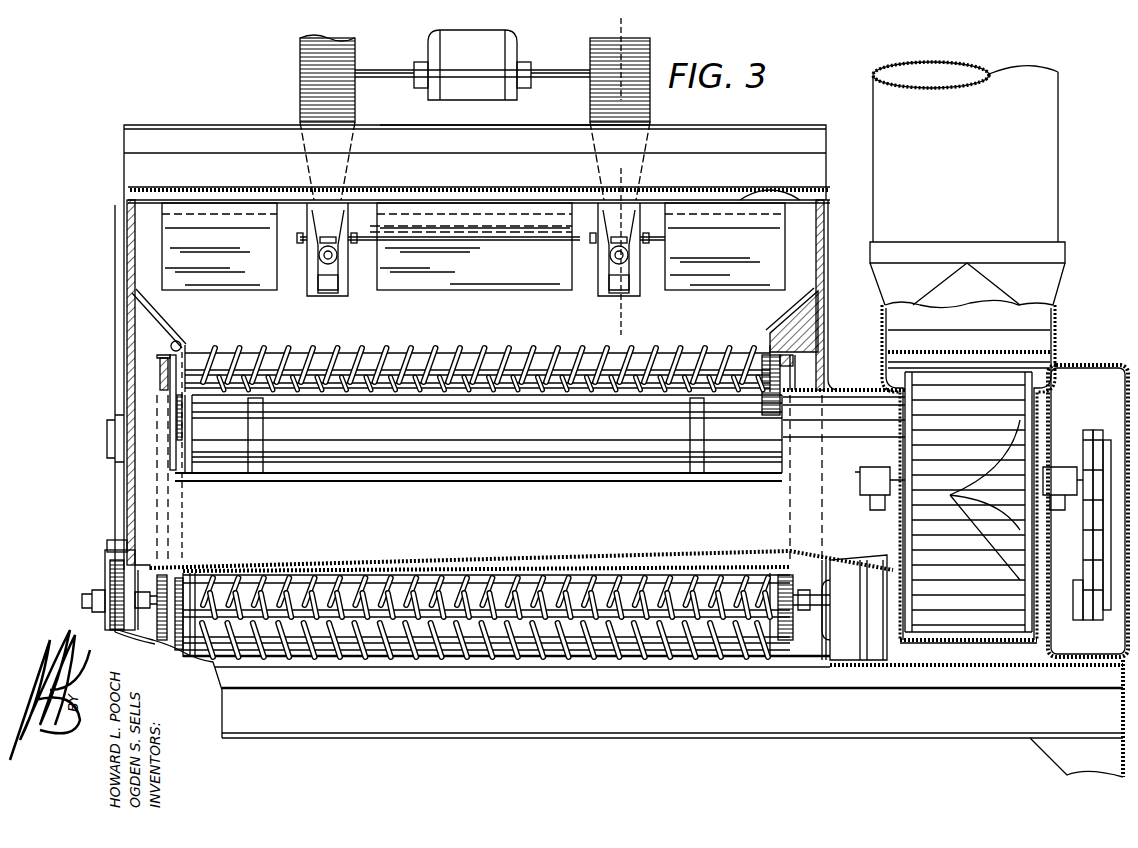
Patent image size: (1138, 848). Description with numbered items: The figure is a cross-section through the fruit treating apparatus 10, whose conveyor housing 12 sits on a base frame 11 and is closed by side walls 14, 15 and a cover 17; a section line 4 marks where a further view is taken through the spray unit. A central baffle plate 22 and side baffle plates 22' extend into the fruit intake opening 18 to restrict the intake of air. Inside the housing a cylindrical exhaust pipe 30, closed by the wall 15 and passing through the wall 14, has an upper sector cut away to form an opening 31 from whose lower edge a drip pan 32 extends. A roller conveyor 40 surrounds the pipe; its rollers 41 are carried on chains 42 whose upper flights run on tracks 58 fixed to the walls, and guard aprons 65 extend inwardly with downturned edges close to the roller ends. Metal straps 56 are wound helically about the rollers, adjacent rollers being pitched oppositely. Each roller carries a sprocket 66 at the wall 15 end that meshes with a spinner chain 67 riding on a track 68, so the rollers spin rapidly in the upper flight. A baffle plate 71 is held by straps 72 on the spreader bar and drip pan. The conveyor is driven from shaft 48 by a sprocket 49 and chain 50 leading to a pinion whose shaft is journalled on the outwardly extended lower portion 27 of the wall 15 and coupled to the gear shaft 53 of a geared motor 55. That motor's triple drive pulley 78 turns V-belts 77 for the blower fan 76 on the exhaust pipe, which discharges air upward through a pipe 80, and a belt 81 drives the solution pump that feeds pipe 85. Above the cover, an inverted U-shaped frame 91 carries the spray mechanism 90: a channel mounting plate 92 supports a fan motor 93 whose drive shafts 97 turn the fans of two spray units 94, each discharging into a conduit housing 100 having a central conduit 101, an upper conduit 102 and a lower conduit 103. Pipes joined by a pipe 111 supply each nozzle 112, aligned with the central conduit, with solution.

The apparatus 10 is at (112, 90).
The base frame 11 is at (598, 748).
The conveyor housing 12 is at (114, 335).
The side wall 14 is at (830, 276).
The side wall 15 is at (126, 278).
The cover 17 is at (432, 188).
The fruit intake opening 18 is at (712, 333).
The central baffle plate 22 is at (474, 255).
The side baffle plates 22' is at (473, 255).
The lower portion of housing wall 27 is at (104, 568).
The cylindrical exhaust pipe 30 is at (546, 517).
The opening 31 is at (470, 465).
The drip pan 32 is at (610, 468).
The roller conveyor 40 is at (483, 340).
The rollers 41 is at (424, 352).
The chains 42 is at (166, 352).
The shaft 48 is at (82, 600).
The sprocket 49 is at (110, 578).
The chain 50 is at (106, 552).
The gear shaft 53 is at (786, 640).
The geared motor 55 is at (852, 645).
The metal straps 56 is at (380, 348).
The tracks 58 is at (160, 380).
The guard aprons 65 is at (170, 322).
The sprocket 66 is at (182, 340).
The spinner chain 67 is at (200, 352).
The track 68 is at (170, 398).
The baffle plate 71 is at (404, 440).
The straps 72 is at (256, 462).
The fan 76 is at (972, 382).
The V-belts 77 is at (1088, 432).
The triple drive pulley 78 is at (1108, 612).
The pipe 80 is at (1060, 152).
The belt 81 is at (1080, 610).
The pipe 85 is at (792, 198).
The spray mechanism 90 is at (278, 98).
The inverted U-shaped frame 91 is at (124, 166).
The channel mounting plate 92 is at (490, 110).
The fan motor 93 is at (512, 44).
The spray unit 94 is at (300, 62).
The drive shafts 97 is at (390, 68).
The conduit housing 100 is at (304, 165).
The central conduit 101 is at (346, 256).
The upper conduit 102 is at (328, 236).
The lower conduit 103 is at (326, 296).
The pipe 111 is at (580, 240).
The nozzle 112 is at (320, 262).
The section line 4- 4 is at (633, 29).